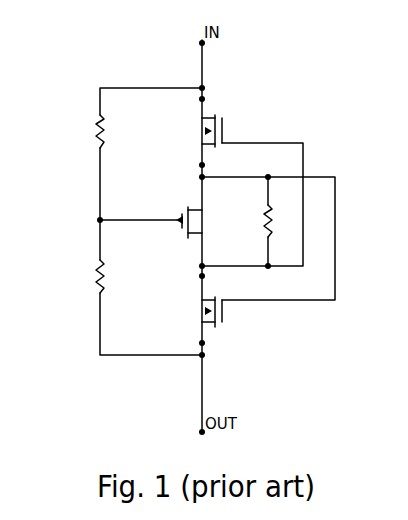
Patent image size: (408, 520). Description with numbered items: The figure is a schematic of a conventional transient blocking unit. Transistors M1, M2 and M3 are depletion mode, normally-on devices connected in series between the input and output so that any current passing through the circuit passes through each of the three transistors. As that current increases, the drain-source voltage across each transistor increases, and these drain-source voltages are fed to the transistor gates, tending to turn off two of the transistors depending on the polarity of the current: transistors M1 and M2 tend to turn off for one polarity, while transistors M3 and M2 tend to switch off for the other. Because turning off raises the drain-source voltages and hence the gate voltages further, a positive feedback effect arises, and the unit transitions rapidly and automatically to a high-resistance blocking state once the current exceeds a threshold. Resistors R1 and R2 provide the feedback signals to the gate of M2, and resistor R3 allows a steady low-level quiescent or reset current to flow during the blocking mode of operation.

The resistor R1 is at (97, 127).
The resistor R2 is at (97, 282).
The resistor R3 is at (266, 226).
The transistor M1 is at (222, 131).
The transistor M2 is at (188, 210).
The transistor M3 is at (222, 322).